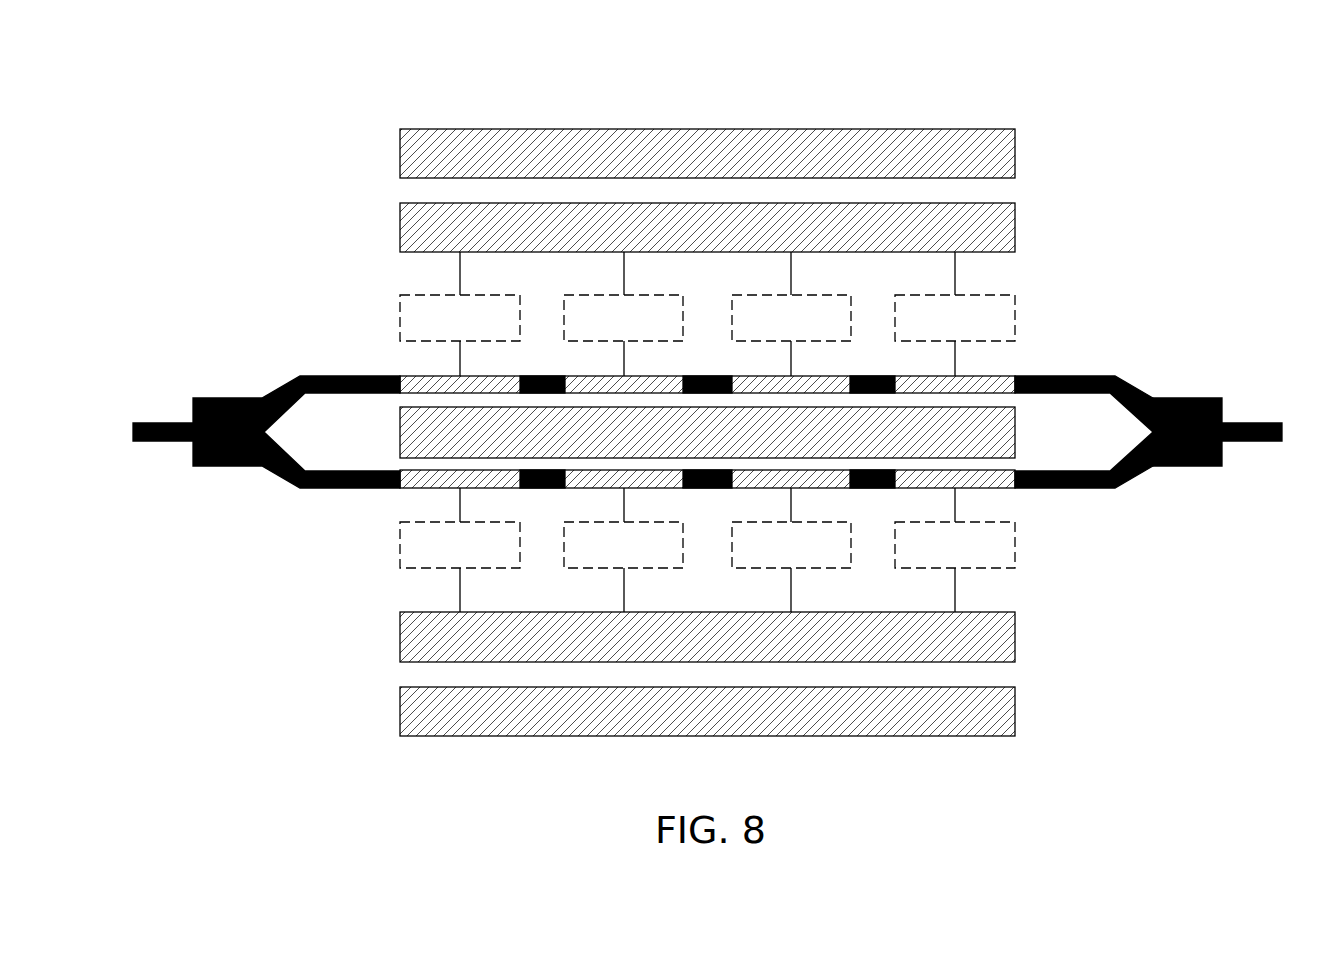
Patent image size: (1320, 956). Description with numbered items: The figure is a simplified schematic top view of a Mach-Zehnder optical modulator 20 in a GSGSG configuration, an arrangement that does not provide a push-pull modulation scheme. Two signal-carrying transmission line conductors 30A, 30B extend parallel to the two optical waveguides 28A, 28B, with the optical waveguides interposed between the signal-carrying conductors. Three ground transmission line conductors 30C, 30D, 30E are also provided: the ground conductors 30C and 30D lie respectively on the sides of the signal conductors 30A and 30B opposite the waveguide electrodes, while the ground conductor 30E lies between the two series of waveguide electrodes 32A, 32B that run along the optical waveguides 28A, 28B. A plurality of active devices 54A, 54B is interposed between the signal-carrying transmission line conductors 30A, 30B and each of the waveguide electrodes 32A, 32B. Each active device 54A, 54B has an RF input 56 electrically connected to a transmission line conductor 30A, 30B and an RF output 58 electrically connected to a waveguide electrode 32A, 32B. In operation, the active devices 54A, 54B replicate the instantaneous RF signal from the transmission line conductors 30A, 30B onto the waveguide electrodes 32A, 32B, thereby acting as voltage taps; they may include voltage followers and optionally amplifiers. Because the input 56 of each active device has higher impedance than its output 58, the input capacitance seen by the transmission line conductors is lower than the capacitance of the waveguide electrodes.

The Mach-Zehnder modulator 20 is at (246, 40).
The optical waveguide 28A is at (1132, 392).
The optical waveguide 28B is at (1131, 472).
The signal-carrying transmission line conductor 30A is at (1015, 226).
The signal-carrying transmission line conductor 30B is at (1015, 637).
The ground transmission line conductor 30C is at (960, 128).
The ground transmission line conductor 30D is at (935, 736).
The ground transmission line conductor 30E is at (400, 432).
The waveguide electrode 32A is at (432, 379).
The waveguide electrode 32B is at (432, 486).
The active device 54A is at (400, 318).
The active device 54B is at (400, 544).
The RF input 56 is at (458, 294).
The RF output 58 is at (462, 343).